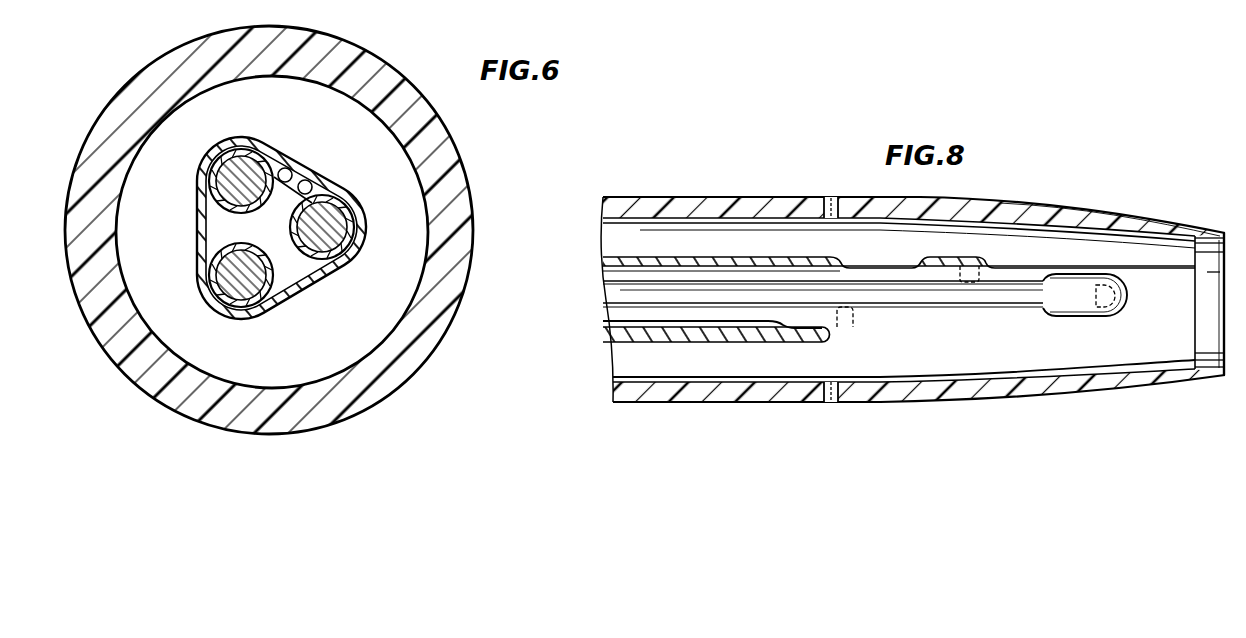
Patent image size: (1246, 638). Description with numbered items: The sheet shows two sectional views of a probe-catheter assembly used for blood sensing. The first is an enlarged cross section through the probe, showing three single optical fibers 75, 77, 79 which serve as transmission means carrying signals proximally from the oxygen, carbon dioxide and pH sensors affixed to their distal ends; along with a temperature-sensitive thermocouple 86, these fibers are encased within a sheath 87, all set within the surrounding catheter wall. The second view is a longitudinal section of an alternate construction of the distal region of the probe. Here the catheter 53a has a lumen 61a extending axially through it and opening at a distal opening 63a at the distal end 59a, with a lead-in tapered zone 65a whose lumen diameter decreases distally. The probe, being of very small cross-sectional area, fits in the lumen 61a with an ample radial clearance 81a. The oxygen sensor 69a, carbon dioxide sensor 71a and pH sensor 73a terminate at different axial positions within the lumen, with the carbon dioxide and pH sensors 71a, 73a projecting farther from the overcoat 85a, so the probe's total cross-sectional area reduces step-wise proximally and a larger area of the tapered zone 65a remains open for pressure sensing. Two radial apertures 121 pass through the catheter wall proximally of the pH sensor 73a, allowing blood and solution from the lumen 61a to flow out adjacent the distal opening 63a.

In FIG. 6, the optical fiber 75 is at (236, 168).
In FIG. 6, the optical fiber 77 is at (366, 223).
In FIG. 6, the optical fiber 79 is at (240, 288).
In FIG. 6, the thermocouple 86 is at (311, 181).
In FIG. 6, the sheath 87 is at (292, 170).
In FIG. 8, the catheter 53a is at (808, 162).
In FIG. 8, the overcoat 85a is at (641, 257).
In FIG. 8, the radial apertures 121 is at (832, 197).
In FIG. 8, the tapered zone 65a is at (1068, 207).
In FIG. 8, the distal end 59a is at (1228, 253).
In FIG. 8, the pH sensor 73a is at (985, 267).
In FIG. 8, the carbon dioxide sensor 71a is at (1105, 317).
In FIG. 8, the oxygen sensor 69a is at (851, 330).
In FIG. 8, the radial clearance 81a is at (645, 366).
In FIG. 8, the lumen 61a is at (1000, 372).
In FIG. 8, the distal opening 63a is at (1228, 355).